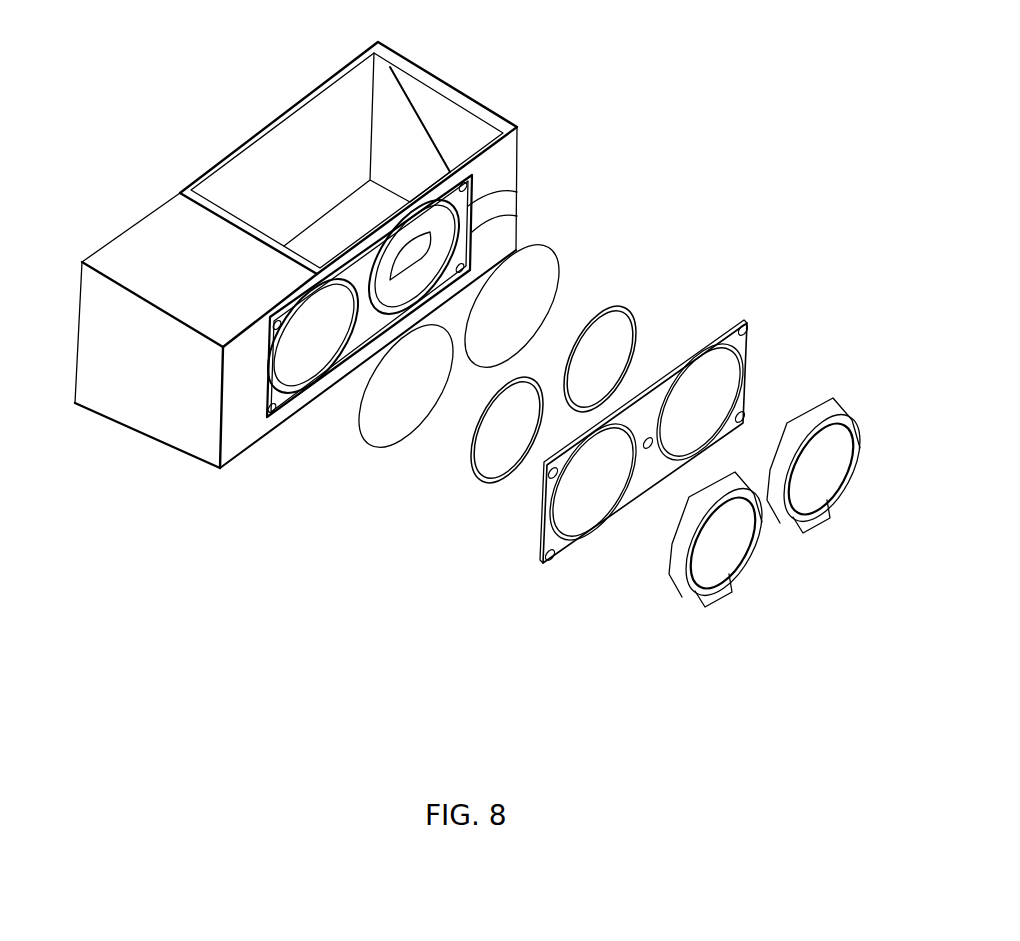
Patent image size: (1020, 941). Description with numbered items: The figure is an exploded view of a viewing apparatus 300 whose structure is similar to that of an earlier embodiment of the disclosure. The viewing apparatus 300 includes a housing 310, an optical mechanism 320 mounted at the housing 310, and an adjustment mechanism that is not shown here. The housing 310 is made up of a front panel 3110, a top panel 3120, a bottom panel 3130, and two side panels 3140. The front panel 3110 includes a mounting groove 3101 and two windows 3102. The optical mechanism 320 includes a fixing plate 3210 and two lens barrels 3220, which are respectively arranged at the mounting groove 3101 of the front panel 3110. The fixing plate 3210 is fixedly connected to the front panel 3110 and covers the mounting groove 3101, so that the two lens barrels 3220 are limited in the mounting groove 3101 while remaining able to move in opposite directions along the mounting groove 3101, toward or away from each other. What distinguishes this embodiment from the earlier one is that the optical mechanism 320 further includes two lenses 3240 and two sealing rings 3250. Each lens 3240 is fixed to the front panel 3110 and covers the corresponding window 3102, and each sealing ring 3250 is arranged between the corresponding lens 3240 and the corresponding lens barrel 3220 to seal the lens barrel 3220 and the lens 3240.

The viewing apparatus 300 is at (470, 334).
The housing 310 is at (339, 294).
The front panel 3110 is at (416, 335).
The top panel 3120 is at (313, 248).
The bottom panel 3130 is at (197, 305).
The side panel 3140 is at (112, 380).
The mounting groove 3101 is at (453, 230).
The window 3102 is at (470, 199).
The optical mechanism 320 is at (608, 440).
The fixing plate 3210 is at (750, 345).
The lens barrel 3220 is at (748, 548).
The lens 3240 is at (547, 272).
The sealing ring 3250 is at (634, 304).